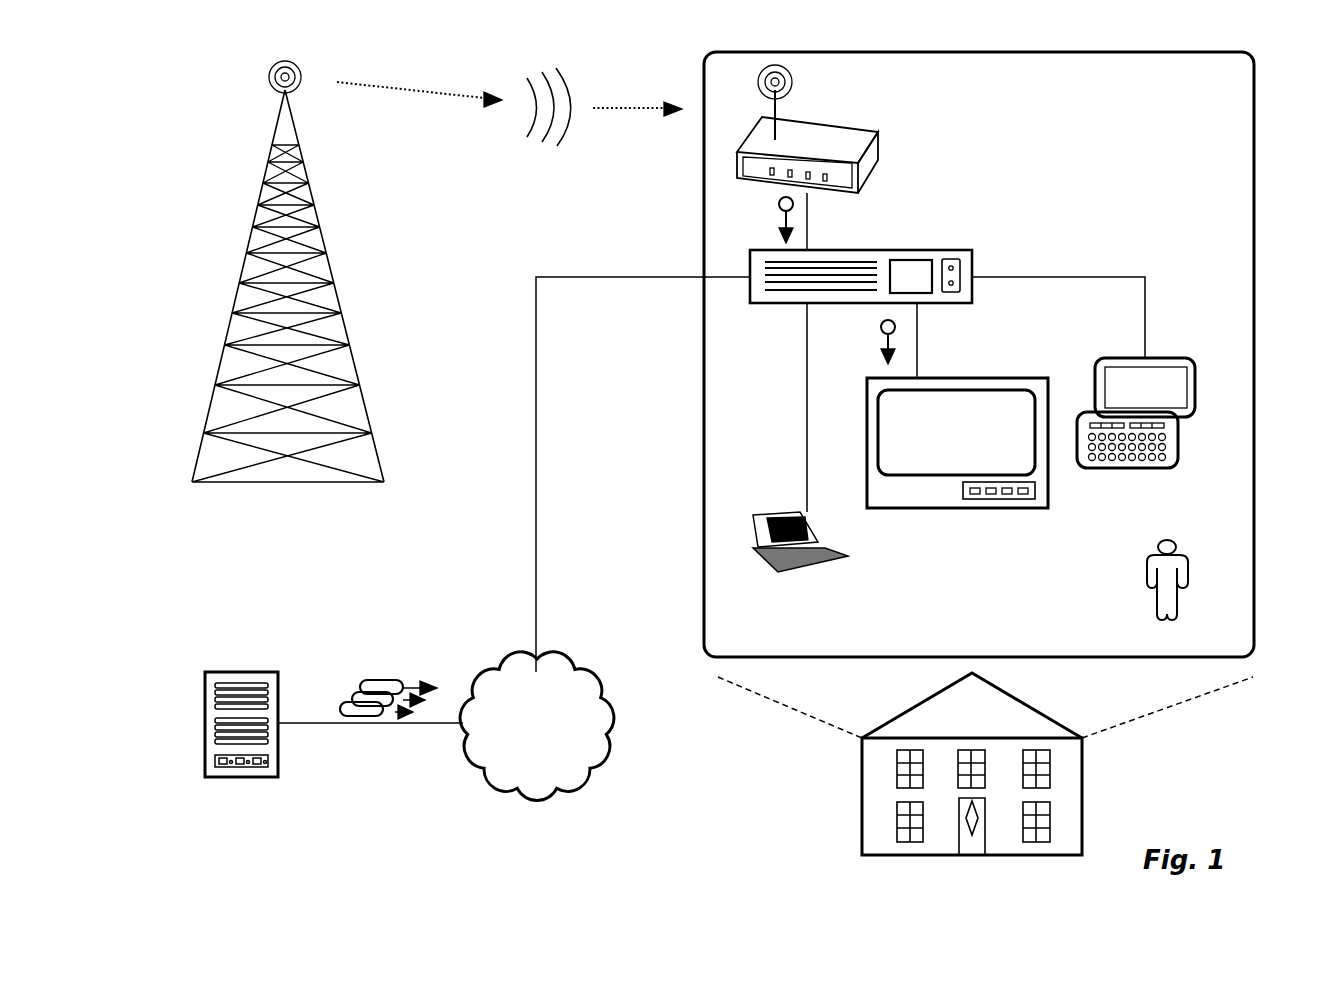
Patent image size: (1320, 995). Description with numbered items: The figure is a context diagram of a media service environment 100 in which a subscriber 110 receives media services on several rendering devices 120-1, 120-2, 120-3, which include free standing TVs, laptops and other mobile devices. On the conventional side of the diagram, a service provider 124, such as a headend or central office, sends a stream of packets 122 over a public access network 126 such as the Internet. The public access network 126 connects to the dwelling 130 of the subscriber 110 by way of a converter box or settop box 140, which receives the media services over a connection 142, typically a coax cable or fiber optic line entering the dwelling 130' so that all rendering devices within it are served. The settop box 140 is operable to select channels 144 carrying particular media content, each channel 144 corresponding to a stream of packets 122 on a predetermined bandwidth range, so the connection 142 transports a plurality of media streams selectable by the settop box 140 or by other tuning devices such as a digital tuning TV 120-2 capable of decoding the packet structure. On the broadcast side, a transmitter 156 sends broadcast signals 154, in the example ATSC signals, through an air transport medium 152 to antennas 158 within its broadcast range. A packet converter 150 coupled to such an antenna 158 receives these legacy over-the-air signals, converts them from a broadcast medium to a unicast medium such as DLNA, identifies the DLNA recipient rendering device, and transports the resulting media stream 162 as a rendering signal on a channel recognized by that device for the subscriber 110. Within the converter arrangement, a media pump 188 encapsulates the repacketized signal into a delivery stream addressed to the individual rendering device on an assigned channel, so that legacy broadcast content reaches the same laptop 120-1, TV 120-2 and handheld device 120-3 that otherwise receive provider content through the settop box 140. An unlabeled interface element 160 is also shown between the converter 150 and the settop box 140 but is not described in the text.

The media service environment 100 is at (276, 505).
The subscriber 110 is at (1146, 572).
The rendering device 120-1 is at (755, 513).
The rendering device 120-2 is at (1002, 378).
The rendering device 120-3 is at (1168, 358).
The stream of packets 122 is at (382, 680).
The service provider 124 is at (278, 672).
The public access network 126 is at (587, 677).
The dwelling 130 is at (985, 764).
The dwelling 130' is at (926, 354).
The settop box 140 is at (893, 232).
The connection 142 is at (623, 275).
The channel 144 is at (920, 258).
The packet converter 150 is at (882, 155).
The air transport medium 152 is at (447, 94).
The broadcast signals 154 is at (568, 88).
The transmitter 156 is at (257, 195).
The antenna 158 is at (780, 105).
The first interface 160 is at (778, 206).
The media stream 162 is at (880, 328).
The media pump 188 is at (911, 276).